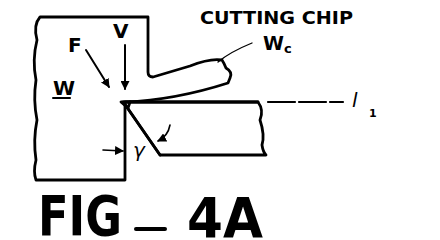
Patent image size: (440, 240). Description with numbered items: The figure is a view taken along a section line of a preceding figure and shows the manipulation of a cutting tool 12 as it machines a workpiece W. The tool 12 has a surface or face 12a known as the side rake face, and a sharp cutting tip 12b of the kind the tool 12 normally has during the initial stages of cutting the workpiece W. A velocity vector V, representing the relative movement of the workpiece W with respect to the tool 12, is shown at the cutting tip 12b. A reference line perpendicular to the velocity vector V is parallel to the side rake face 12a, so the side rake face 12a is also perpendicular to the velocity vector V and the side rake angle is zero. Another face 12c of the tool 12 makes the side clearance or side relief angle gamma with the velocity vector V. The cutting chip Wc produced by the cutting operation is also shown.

The tool 12 is at (230, 135).
The side rake face 12a is at (240, 101).
The cutting tip 12b is at (123, 103).
The face 12c is at (158, 156).